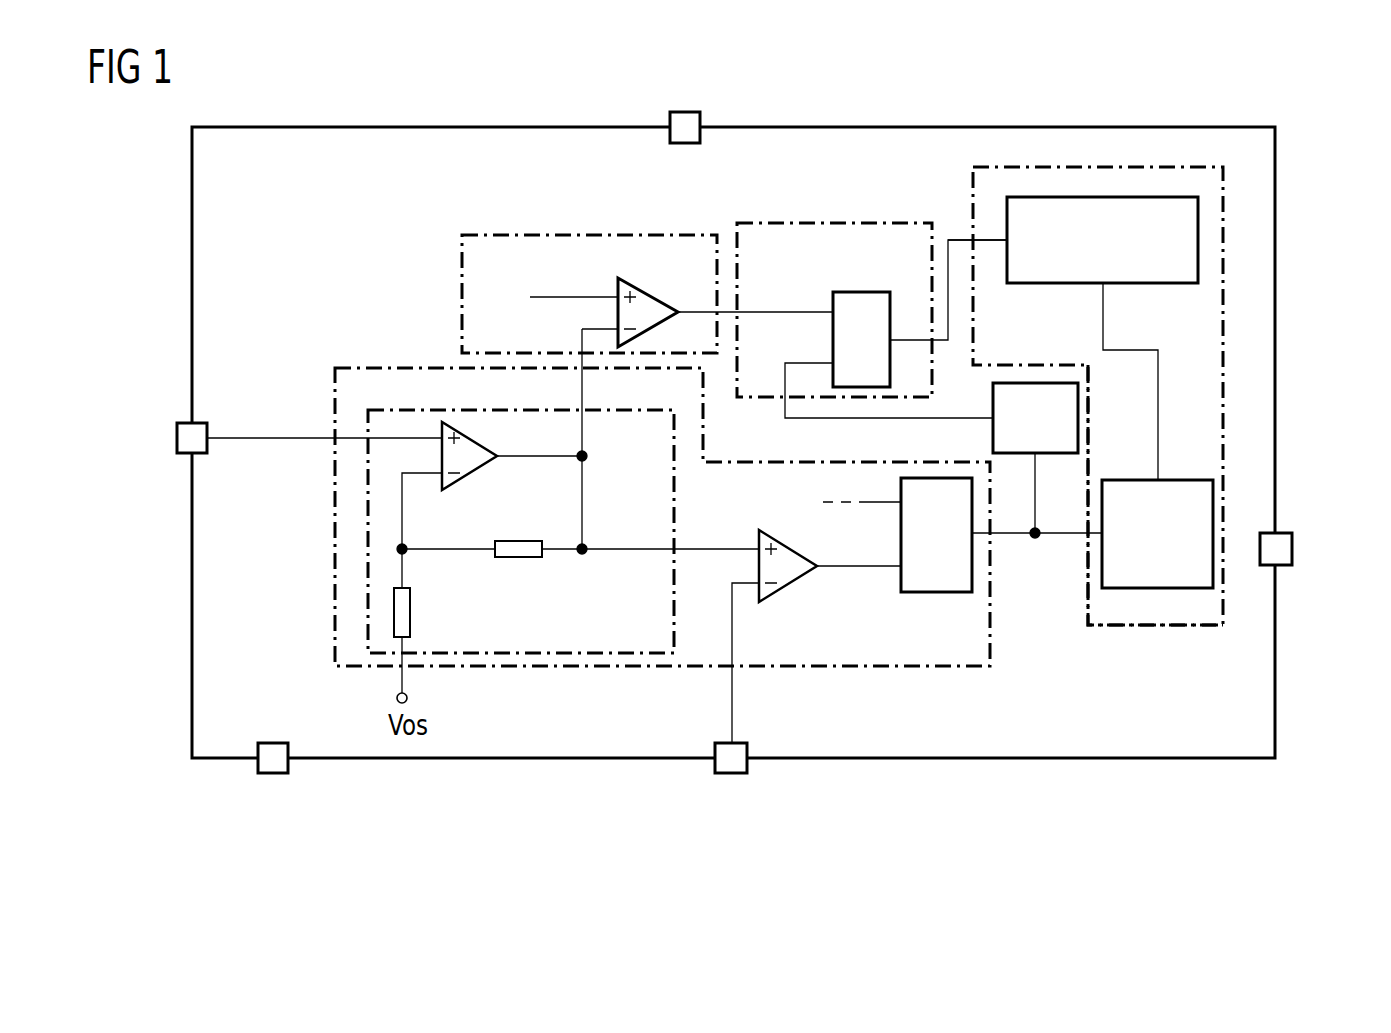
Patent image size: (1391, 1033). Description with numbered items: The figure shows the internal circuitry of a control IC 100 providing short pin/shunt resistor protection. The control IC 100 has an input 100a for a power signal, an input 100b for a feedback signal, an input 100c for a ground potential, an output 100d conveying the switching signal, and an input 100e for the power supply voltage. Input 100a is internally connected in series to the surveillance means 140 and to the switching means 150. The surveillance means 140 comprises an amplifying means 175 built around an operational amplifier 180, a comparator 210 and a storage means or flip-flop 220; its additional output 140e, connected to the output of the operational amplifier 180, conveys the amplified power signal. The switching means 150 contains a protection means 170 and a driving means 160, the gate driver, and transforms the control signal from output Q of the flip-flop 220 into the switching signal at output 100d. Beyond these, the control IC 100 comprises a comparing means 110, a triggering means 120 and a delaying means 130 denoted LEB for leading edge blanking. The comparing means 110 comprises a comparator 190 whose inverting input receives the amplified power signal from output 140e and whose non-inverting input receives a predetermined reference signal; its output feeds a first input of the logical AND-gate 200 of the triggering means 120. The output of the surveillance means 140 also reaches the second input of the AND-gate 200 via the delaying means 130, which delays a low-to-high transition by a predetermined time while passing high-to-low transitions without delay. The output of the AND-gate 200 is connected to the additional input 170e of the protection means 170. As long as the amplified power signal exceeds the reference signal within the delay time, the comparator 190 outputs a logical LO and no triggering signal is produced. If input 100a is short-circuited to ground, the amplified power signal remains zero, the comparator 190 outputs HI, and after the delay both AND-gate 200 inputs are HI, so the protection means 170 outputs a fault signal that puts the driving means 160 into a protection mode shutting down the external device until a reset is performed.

The control IC 100 is at (1206, 126).
The input for a power signal 100a is at (177, 444).
The input for a feedback signal 100b is at (731, 775).
The input for a ground potential 100c is at (275, 775).
The output conveying the switching signal 100d is at (1293, 548).
The input for the power supply 100e is at (683, 110).
The comparing means 110 is at (592, 235).
The triggering means 120 is at (834, 222).
The delaying means 130 is at (993, 428).
The surveillance means 140 is at (990, 640).
The additional output of the surveillance means 140e is at (582, 400).
The switching means 150 is at (973, 180).
The driving means 160 is at (1178, 480).
The protection means 170 is at (1168, 285).
The additional input of the protection means 170e is at (1007, 243).
The amplifying means 175 is at (674, 525).
The operational amplifier 180 is at (483, 475).
The comparator 190 is at (618, 280).
The logical AND-gate 200 is at (833, 300).
The comparator 210 is at (788, 590).
The flip-flop 220 is at (937, 594).